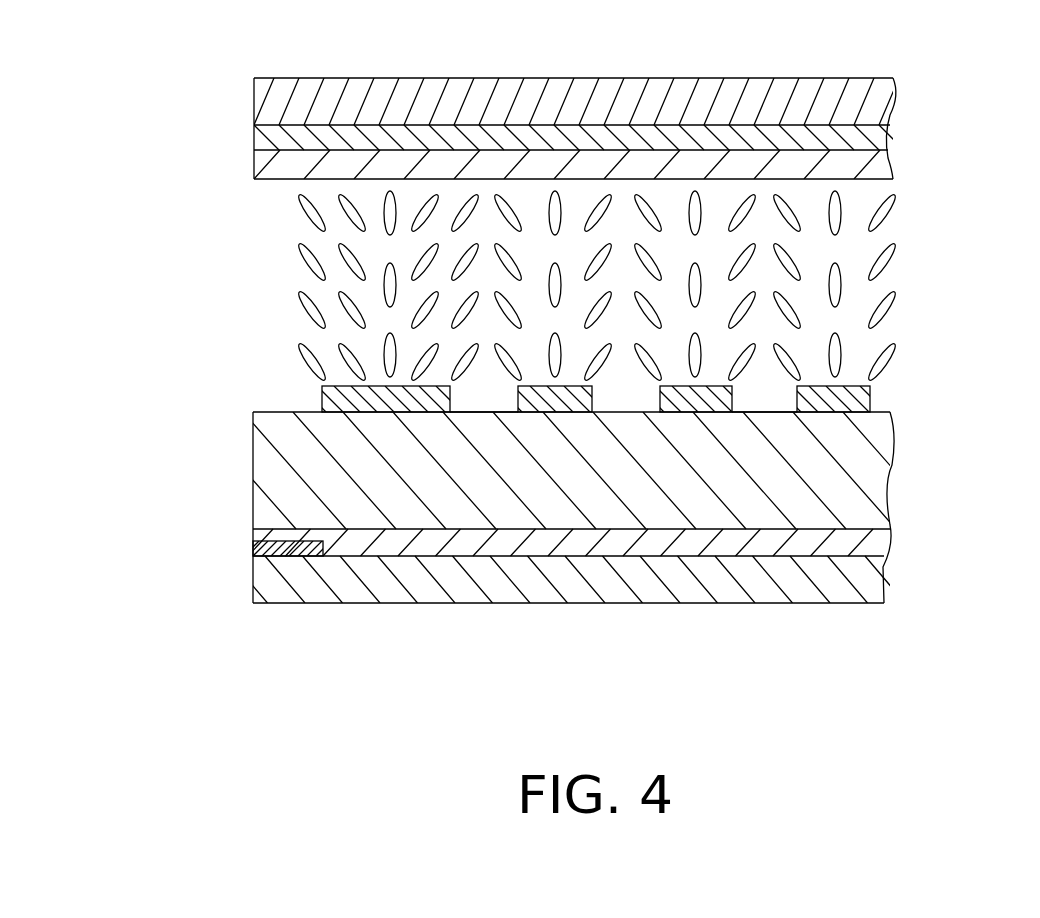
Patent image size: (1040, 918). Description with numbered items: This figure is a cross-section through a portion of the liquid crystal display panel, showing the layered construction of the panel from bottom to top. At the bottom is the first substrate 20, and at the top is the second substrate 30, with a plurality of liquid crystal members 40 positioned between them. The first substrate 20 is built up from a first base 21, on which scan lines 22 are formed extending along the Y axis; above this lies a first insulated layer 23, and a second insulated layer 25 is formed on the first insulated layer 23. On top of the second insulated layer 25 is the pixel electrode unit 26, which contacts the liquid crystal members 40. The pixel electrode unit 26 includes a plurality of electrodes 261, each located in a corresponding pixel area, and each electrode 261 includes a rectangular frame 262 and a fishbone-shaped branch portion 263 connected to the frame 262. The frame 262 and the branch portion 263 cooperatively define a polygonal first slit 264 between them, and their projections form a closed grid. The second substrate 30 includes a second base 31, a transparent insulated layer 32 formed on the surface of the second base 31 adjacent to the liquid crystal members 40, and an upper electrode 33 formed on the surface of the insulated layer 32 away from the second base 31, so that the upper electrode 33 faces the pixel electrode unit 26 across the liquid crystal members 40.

The first substrate 20 is at (552, 422).
The first base 21 is at (857, 582).
The scan line 22 is at (253, 547).
The first insulated layer 23 is at (870, 538).
The second insulated layer 25 is at (855, 458).
The pixel electrode unit 26 is at (546, 422).
The electrode 261 is at (282, 387).
The rectangular frame 262 is at (493, 526).
The fishbone-shaped branch portion 263 is at (542, 405).
The first slit 264 is at (478, 397).
The second substrate 30 is at (640, 93).
The second base 31 is at (800, 110).
The transparent insulated layer 32 is at (863, 135).
The upper electrode 33 is at (873, 167).
The liquid crystal members 40 is at (902, 252).